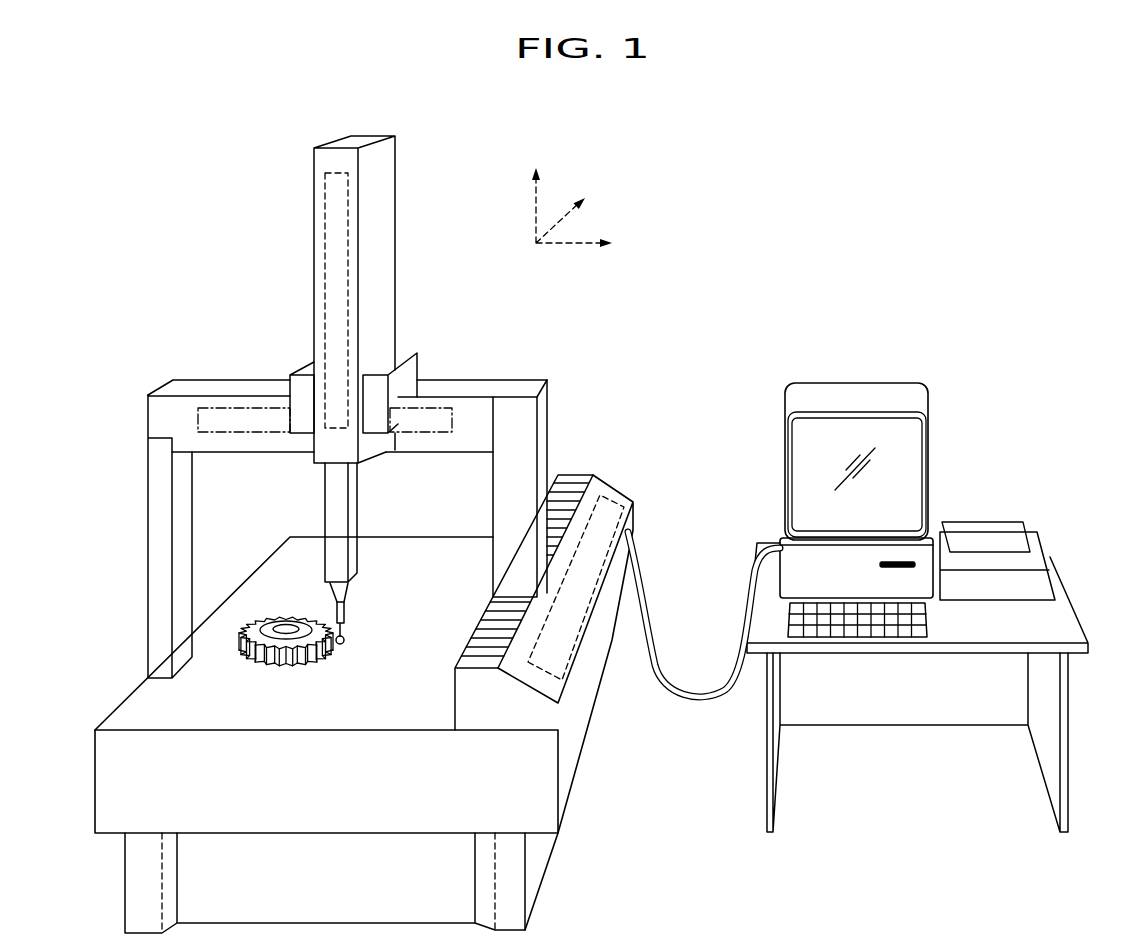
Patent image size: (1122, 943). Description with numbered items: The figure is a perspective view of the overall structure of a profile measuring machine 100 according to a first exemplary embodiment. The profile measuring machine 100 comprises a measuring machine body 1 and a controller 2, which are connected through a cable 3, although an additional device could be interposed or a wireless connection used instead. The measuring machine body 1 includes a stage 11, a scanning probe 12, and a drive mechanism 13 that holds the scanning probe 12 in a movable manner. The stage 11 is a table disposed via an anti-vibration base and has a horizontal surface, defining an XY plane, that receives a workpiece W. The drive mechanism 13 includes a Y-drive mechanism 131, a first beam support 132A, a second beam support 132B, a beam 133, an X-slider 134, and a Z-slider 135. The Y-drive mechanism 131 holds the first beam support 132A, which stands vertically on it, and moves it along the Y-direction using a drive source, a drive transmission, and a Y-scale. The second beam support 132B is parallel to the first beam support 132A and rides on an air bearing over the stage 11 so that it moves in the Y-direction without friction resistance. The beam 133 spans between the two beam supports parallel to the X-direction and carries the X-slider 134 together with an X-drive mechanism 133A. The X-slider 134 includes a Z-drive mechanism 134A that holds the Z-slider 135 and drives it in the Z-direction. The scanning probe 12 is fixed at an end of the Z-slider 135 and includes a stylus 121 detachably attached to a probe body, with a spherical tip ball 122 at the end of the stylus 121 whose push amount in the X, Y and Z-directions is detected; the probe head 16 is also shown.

The profile measuring machine 100 is at (950, 132).
The measuring machine body 1 is at (207, 183).
The controller 2 is at (980, 283).
The cable 3 is at (655, 582).
The stage 11 is at (137, 715).
The scanning probe 12 is at (320, 598).
The drive mechanism 13 is at (157, 348).
The probe head 16 is at (359, 549).
The stylus 121 is at (347, 628).
The tip ball 122 is at (345, 641).
The Y-drive mechanism 131 is at (620, 485).
The first beam support 132A is at (550, 398).
The second beam support 132B is at (147, 465).
The beam 133 is at (227, 380).
The X-drive mechanism 133A is at (428, 408).
The X-slider 134 is at (398, 360).
The Z-drive mechanism 134A is at (334, 172).
The Z-slider 135 is at (340, 497).
The workpiece W is at (322, 661).